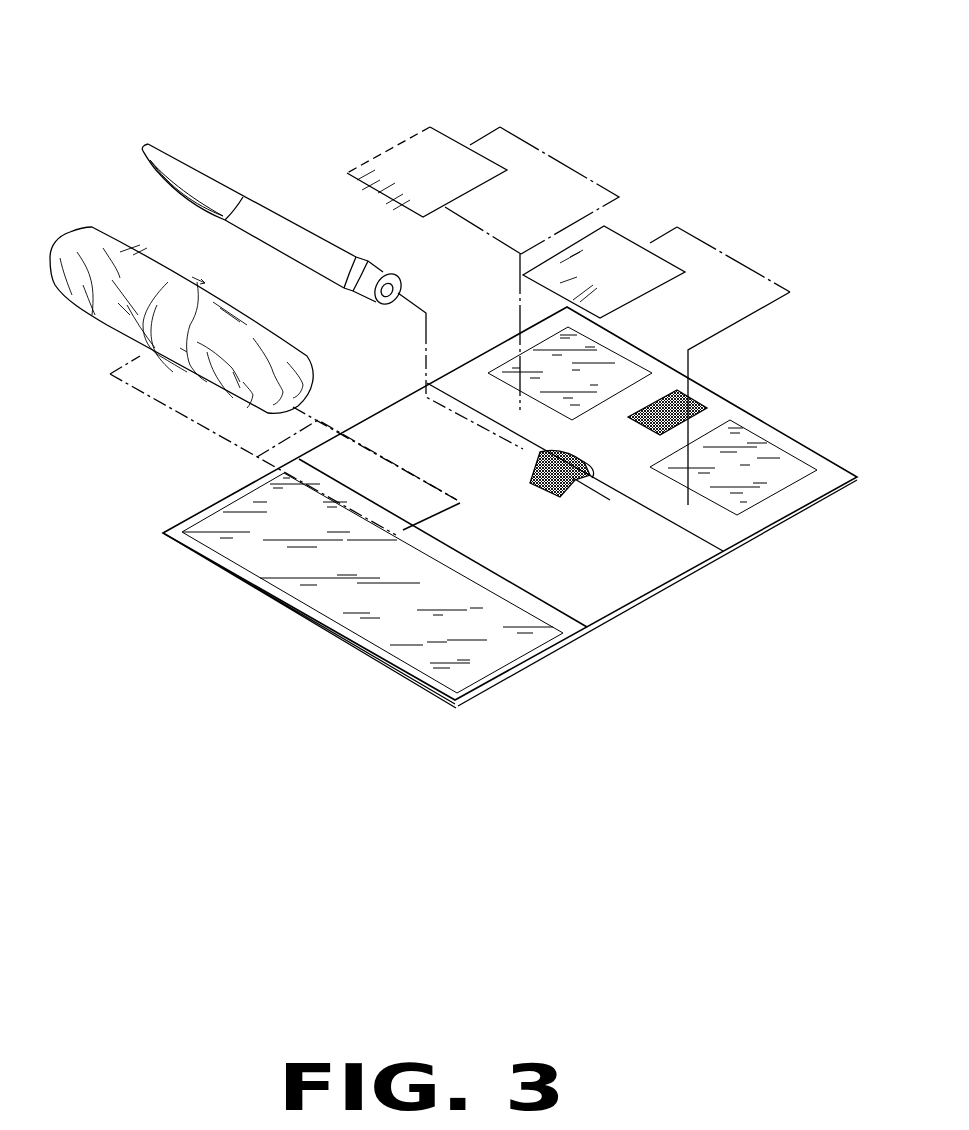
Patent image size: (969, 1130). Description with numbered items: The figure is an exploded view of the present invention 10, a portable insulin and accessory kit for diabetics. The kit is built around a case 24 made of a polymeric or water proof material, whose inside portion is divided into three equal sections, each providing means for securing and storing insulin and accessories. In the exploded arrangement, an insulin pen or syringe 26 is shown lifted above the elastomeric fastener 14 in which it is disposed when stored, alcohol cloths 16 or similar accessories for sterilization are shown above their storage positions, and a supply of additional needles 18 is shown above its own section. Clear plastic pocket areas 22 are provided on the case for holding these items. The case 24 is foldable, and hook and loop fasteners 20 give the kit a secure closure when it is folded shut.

The present invention 10 is at (721, 156).
The elastomeric fastener 14 is at (540, 487).
The alcohol cloths 16 is at (637, 242).
The supply of additional needles 18 is at (93, 232).
The hook and loop fasteners 20 is at (700, 406).
The clear plastic pocket areas 22 is at (770, 476).
The case 24 is at (633, 597).
The insulin pen or syringe 26 is at (237, 190).